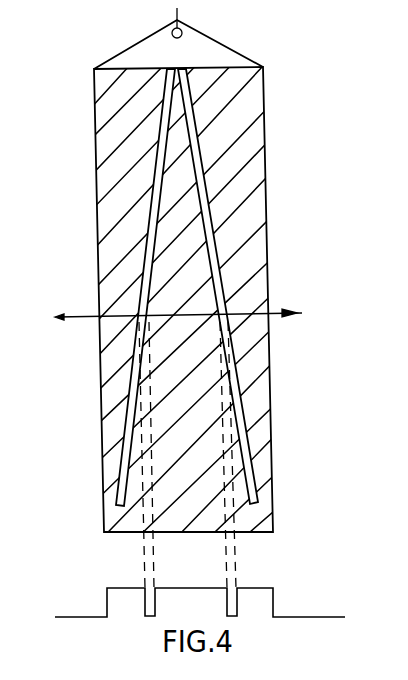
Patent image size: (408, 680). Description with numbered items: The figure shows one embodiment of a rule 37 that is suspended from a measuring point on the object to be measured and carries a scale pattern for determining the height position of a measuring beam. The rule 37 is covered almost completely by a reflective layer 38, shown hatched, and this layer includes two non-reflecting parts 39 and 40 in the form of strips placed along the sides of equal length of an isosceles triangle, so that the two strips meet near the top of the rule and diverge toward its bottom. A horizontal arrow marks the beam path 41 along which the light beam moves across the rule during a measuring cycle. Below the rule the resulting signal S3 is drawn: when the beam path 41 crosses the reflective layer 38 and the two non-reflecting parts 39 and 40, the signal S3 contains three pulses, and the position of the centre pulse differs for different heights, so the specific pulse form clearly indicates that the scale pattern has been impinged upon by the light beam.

The rule 37 is at (223, 53).
The reflective layer 38 is at (250, 183).
The non-reflecting part 39 is at (159, 140).
The non-reflecting part 40 is at (204, 141).
The beam path 41 is at (82, 316).
The signal S3 is at (85, 610).